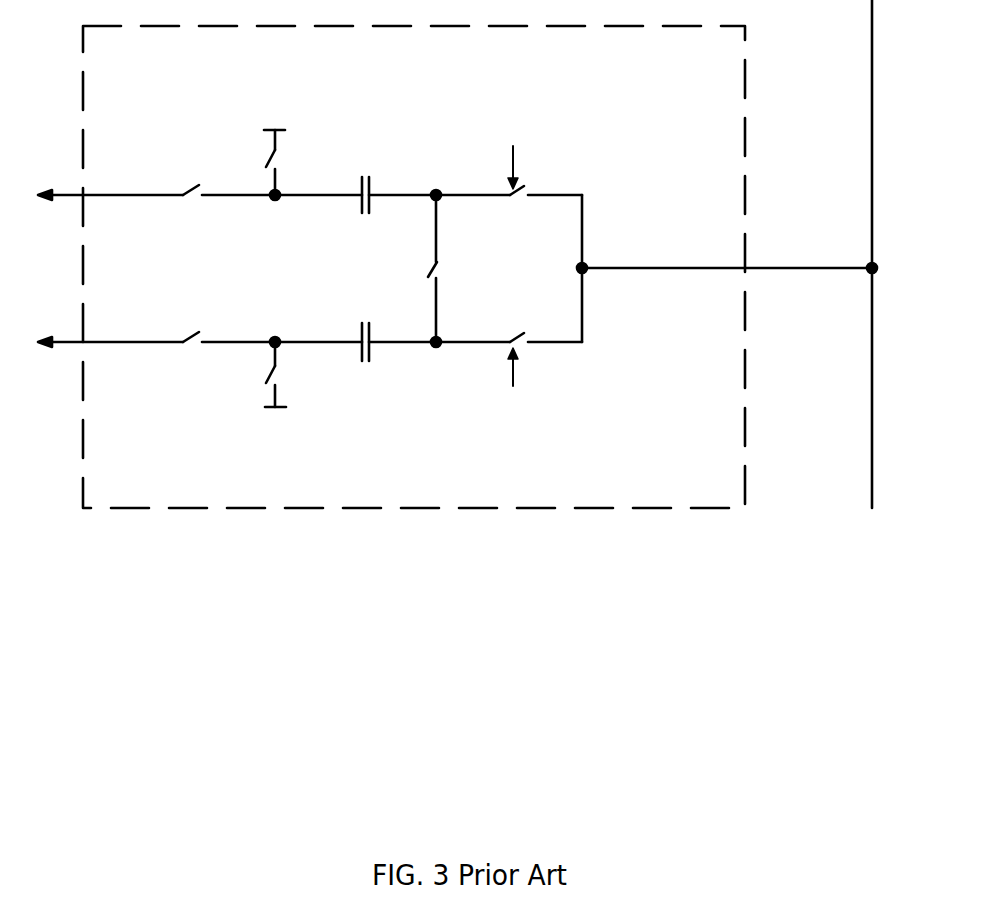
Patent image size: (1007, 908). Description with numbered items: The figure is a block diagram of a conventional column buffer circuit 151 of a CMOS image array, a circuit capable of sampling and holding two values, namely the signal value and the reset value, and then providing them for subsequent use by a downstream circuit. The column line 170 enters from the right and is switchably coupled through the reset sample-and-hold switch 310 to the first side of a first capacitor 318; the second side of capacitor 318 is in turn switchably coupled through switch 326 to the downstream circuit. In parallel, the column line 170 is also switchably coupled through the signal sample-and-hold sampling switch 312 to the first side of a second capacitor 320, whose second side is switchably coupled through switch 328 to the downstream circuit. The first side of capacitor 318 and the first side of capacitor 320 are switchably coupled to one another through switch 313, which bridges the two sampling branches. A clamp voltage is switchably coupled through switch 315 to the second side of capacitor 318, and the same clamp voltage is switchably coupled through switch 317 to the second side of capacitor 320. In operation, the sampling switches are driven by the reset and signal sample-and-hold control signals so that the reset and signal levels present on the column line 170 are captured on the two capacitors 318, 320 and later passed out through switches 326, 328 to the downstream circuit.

The column buffer circuit 151 is at (727, 67).
The column line 170 is at (870, 204).
The SH_R switch 310 is at (519, 199).
The sampling switch 312 is at (522, 333).
The switch 313 is at (440, 269).
The switch 315 is at (279, 163).
The switch 317 is at (279, 380).
The capacitor 318 is at (363, 175).
The capacitor 320 is at (364, 364).
The switch 326 is at (197, 200).
The switch 328 is at (197, 347).